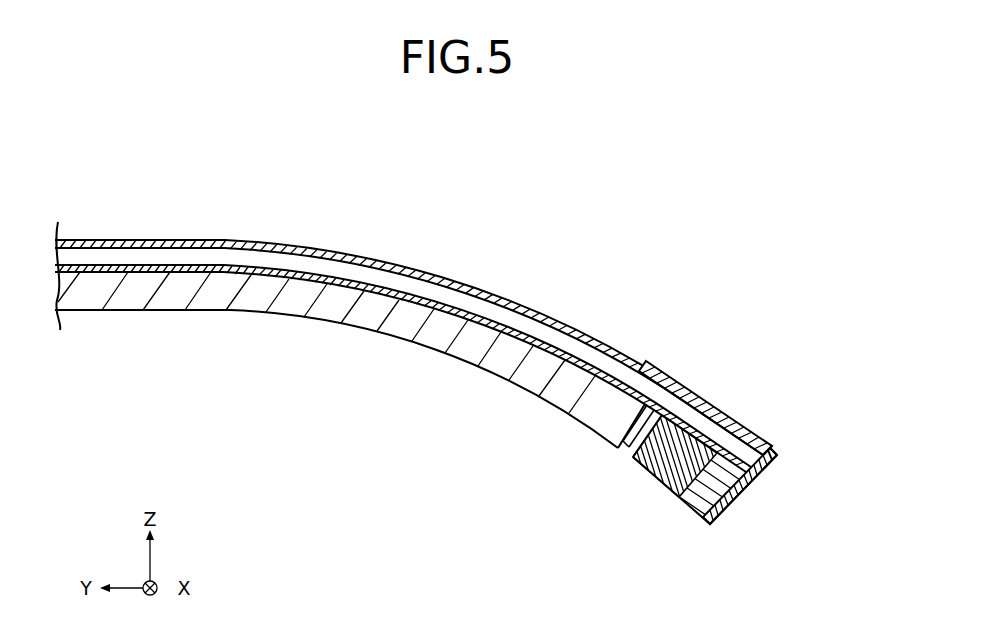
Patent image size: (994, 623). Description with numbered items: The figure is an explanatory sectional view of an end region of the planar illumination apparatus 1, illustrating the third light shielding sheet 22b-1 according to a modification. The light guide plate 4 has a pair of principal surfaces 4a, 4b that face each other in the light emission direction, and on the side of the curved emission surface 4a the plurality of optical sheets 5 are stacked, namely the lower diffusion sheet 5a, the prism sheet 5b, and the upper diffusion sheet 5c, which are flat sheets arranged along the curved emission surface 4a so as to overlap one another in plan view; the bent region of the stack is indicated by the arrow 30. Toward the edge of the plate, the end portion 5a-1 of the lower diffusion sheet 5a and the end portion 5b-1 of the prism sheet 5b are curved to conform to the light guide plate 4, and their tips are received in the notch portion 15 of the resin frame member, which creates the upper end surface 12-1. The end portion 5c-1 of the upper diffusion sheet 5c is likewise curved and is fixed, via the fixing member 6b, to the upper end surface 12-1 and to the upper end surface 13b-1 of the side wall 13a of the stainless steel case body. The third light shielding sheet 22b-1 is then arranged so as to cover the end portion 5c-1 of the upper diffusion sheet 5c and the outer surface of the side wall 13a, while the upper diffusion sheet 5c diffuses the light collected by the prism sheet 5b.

The planar illumination apparatus 1 is at (716, 190).
The light guide plate 4 is at (253, 298).
The emission surface 4a is at (148, 268).
The principal surface 4b is at (155, 312).
The optical sheets 5 is at (215, 153).
The lower diffusion sheet 5a is at (224, 268).
The prism sheet 5b is at (272, 260).
The upper diffusion sheet 5c is at (333, 255).
The end portion of the lower diffusion sheet 5a-1 is at (630, 452).
The end portion of the prism sheet 5b-1 is at (621, 438).
The end portion of the upper diffusion sheet 5c-1 is at (742, 428).
The fixing member 6b is at (778, 452).
The upper end surface 12-1 is at (708, 393).
The side wall 13a is at (718, 541).
The upper end surface of the side wall 13b-1 is at (775, 442).
The notch portion 15 is at (641, 465).
The third light shielding sheet 22b-1 is at (647, 359).
The bent portion 30 is at (415, 244).